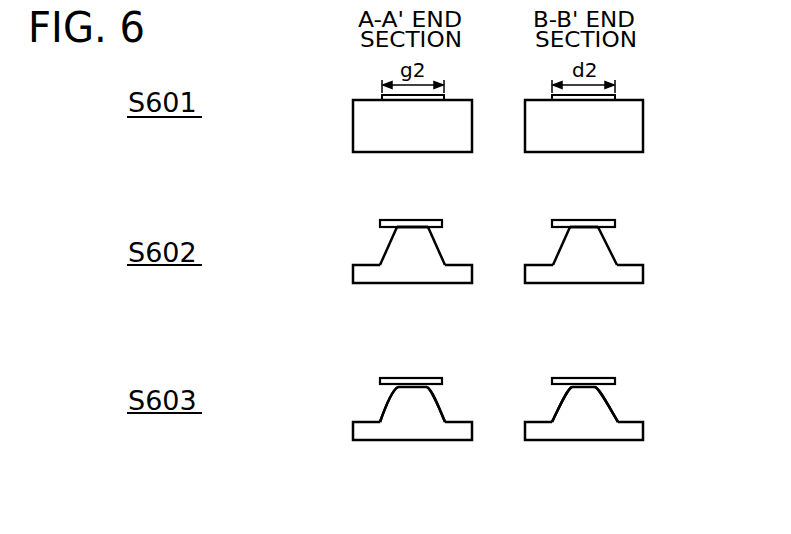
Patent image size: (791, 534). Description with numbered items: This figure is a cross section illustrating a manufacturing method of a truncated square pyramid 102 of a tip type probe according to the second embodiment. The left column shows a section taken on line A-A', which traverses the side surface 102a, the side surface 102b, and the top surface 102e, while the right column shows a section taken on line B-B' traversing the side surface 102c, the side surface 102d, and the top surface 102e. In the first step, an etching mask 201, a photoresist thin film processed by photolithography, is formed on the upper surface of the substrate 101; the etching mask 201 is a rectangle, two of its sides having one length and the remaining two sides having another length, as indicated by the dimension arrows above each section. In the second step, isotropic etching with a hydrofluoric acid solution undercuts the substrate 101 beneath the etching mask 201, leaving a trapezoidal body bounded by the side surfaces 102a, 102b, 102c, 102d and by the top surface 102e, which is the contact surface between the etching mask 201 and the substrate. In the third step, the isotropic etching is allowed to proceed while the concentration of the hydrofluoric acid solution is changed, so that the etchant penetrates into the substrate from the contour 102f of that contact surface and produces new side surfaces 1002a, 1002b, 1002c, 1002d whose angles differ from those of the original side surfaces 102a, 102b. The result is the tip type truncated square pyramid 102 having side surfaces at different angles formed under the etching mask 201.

The substrate 101 is at (365, 127).
The etching mask 201 is at (380, 97).
The truncated square pyramid 102 is at (413, 405).
The side surface 102a is at (378, 257).
The side surface 102b is at (440, 252).
The side surface 102c is at (558, 250).
The side surface 102d is at (613, 258).
The top surface 102e is at (413, 227).
The contour 102f is at (400, 221).
The side surface 1002a is at (398, 390).
The side surface 1002b is at (427, 390).
The side surface 1002c is at (572, 390).
The side surface 1002d is at (595, 390).